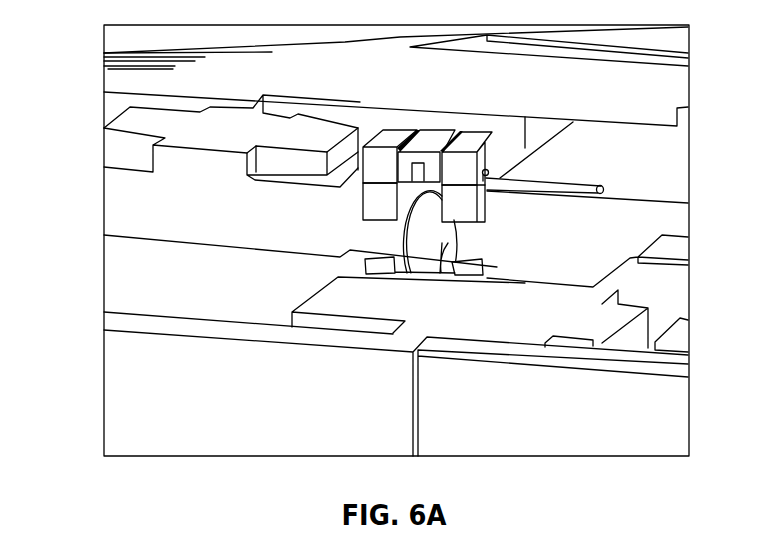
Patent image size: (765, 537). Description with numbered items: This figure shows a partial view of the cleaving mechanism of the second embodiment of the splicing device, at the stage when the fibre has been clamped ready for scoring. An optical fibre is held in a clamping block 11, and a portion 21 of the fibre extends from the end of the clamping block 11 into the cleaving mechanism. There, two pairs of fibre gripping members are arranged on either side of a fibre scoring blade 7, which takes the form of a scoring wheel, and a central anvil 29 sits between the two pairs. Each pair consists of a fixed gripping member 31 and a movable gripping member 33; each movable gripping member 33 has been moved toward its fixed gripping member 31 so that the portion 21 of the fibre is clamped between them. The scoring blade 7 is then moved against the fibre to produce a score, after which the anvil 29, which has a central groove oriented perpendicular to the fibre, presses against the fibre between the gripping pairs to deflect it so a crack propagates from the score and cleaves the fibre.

The clamping block 11 is at (113, 196).
The fibre scoring blade 7 is at (420, 228).
The portion of the optical fibre 21 is at (572, 180).
The central anvil 29 is at (423, 157).
The fixed gripping member 31 is at (378, 153).
The movable gripping member 33 is at (363, 210).